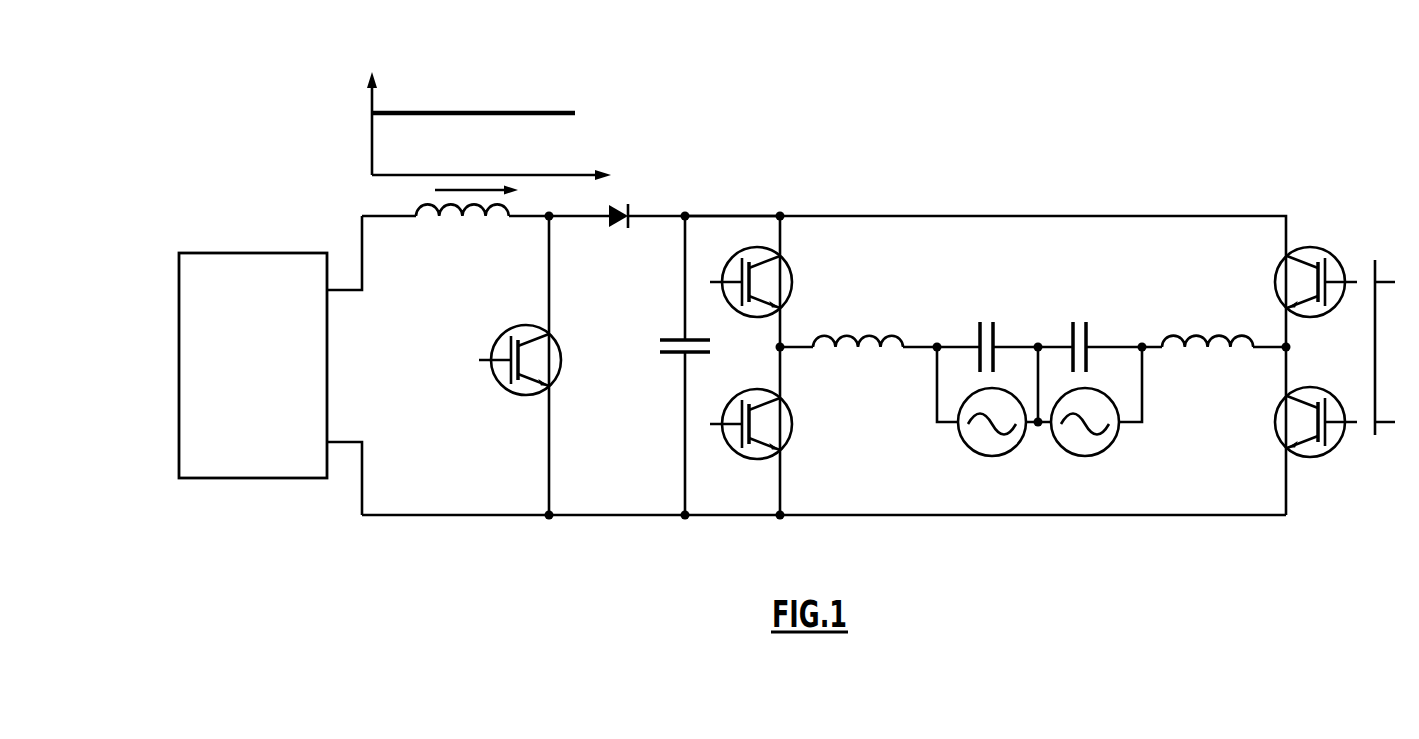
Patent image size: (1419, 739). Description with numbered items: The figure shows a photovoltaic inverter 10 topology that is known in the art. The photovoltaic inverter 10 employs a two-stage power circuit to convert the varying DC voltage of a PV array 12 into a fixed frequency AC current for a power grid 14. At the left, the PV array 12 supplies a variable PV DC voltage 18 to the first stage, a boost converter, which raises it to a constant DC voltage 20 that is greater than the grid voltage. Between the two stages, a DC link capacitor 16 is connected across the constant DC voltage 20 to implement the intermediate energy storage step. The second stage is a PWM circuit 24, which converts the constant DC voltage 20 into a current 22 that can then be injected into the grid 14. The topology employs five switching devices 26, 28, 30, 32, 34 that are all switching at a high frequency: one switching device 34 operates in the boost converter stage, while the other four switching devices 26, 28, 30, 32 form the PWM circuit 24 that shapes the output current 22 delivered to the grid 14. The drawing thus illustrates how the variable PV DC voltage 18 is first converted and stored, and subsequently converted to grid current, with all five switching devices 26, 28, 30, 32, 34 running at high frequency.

The photovoltaic inverter 10 is at (926, 98).
The PV array 12 is at (243, 243).
The power grid 14 is at (1376, 442).
The DC link capacitor 16 is at (662, 375).
The variable PV DC voltage 18 is at (349, 291).
The constant DC voltage 20 is at (732, 215).
The current 22 is at (918, 345).
The PWM circuit 24 is at (1073, 200).
The switching device 26 is at (792, 282).
The switching device 28 is at (790, 436).
The switching device 30 is at (1276, 278).
The switching device 32 is at (1276, 422).
The switching device 34 is at (515, 393).